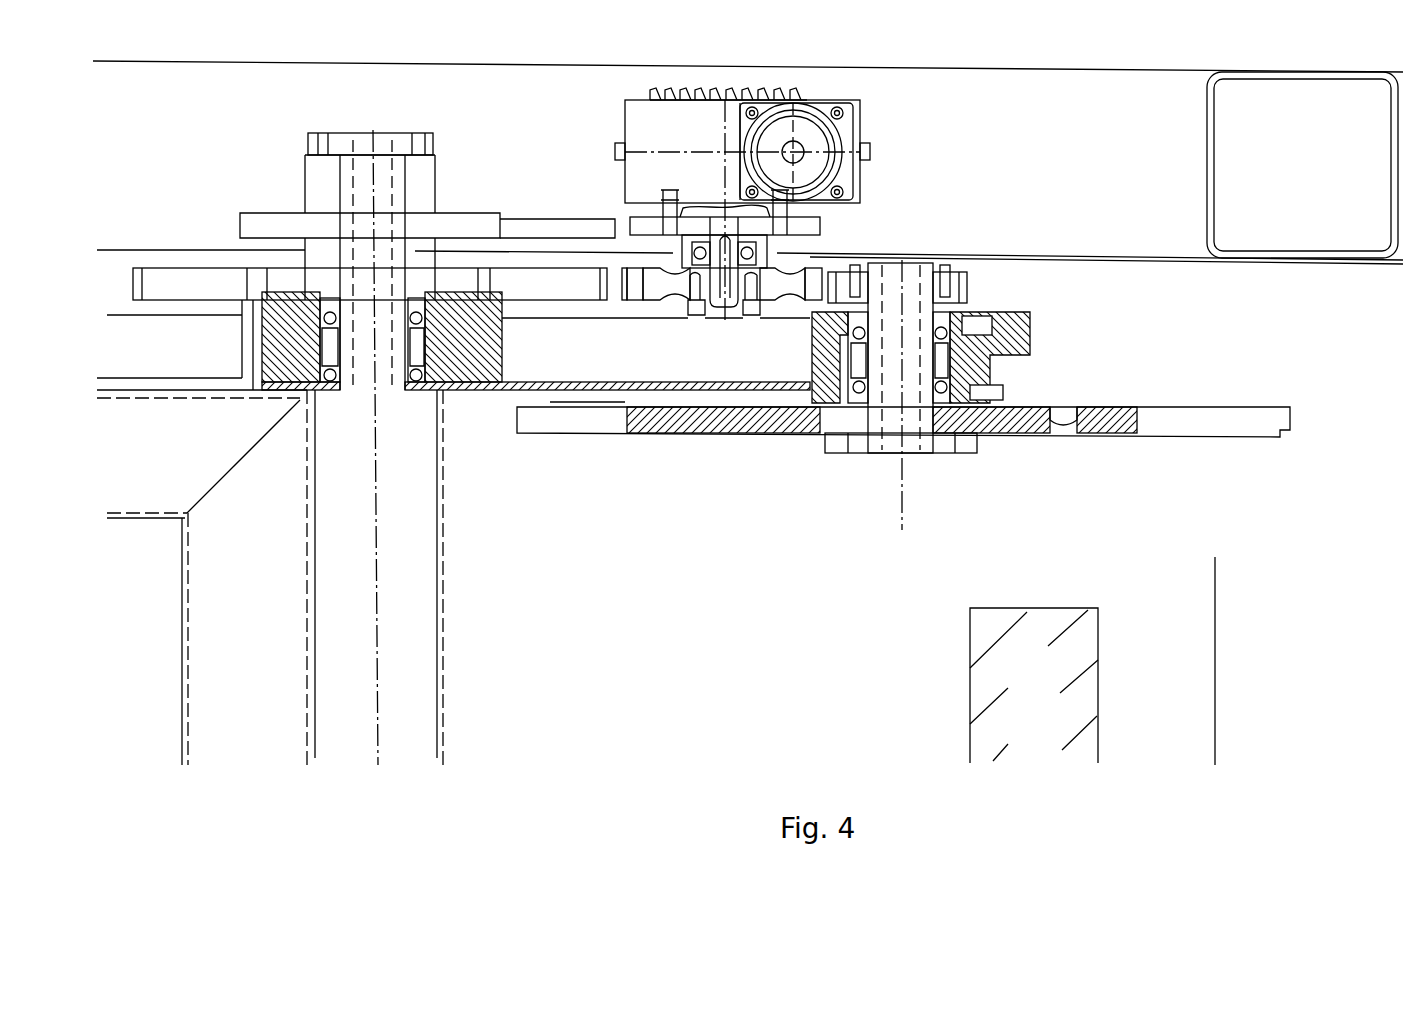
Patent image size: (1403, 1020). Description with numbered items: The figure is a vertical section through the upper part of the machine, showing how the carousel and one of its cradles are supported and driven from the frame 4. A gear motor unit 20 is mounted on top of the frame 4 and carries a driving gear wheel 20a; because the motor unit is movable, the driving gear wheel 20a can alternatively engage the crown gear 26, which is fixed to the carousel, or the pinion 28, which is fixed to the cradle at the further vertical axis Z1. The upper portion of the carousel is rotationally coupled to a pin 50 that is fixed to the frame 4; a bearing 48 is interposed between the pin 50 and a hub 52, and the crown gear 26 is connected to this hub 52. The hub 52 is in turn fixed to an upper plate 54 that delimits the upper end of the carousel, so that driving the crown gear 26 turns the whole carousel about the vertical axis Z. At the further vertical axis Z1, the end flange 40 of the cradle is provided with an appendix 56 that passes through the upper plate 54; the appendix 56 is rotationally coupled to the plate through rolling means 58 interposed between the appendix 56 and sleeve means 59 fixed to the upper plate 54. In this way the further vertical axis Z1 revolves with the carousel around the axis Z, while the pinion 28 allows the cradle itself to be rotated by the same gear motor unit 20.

The frame 4 is at (1240, 117).
The gear motor unit 20 is at (648, 130).
The driving gear wheel 20a is at (640, 297).
The crown gear 26 is at (545, 290).
The pinion 28 is at (970, 288).
The end flange 40 is at (1237, 428).
The bearing 48 is at (413, 400).
The pin 50 is at (362, 195).
The hub 52 is at (503, 343).
The upper plate 54 is at (495, 395).
The appendix 56 is at (897, 310).
The rolling means 58 is at (863, 387).
The sleeve means 59 is at (810, 363).
The axis Z is at (380, 676).
The further vertical axis Z1 is at (902, 523).